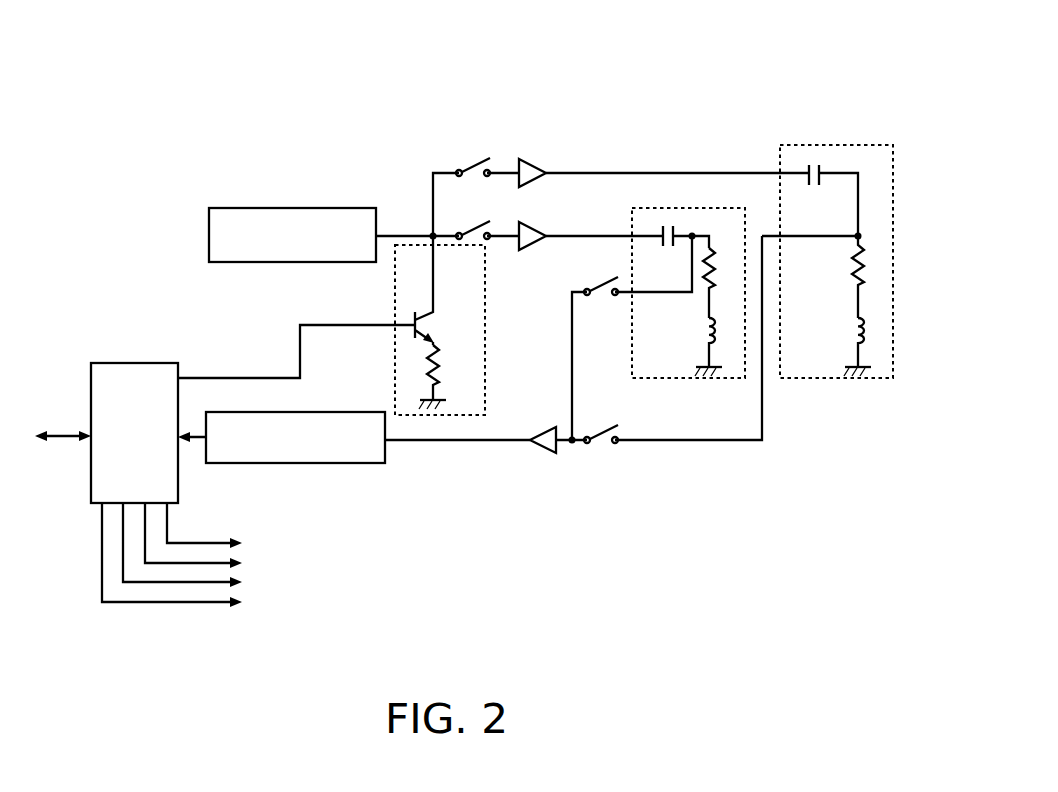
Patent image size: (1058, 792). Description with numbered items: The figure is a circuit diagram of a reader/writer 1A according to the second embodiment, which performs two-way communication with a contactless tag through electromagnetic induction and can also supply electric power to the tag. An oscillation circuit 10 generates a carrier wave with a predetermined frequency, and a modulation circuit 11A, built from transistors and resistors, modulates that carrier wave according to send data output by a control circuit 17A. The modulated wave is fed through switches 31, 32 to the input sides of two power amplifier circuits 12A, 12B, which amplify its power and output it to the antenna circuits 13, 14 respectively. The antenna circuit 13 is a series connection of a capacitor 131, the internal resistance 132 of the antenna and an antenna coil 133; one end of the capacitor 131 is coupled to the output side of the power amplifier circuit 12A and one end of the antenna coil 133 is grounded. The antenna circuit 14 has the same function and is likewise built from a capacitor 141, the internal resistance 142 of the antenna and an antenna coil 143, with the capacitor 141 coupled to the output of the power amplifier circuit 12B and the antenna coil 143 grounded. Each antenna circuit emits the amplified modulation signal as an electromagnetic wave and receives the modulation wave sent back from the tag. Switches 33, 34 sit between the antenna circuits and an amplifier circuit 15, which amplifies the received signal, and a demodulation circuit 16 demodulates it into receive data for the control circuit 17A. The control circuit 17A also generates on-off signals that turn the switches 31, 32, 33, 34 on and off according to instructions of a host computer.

The reader/writer 1A is at (842, 120).
The oscillation circuit 10 is at (350, 208).
The modulation circuit 11A is at (394, 294).
The power amplifier circuit 12A is at (541, 159).
The power amplifier circuit 12B is at (541, 222).
The antenna circuit 13 is at (836, 291).
The capacitor 131 is at (823, 166).
The internal resistance of the antenna 132 is at (854, 270).
The antenna coil 133 is at (854, 350).
The antenna circuit 14 is at (688, 322).
The capacitor 141 is at (676, 233).
The internal resistance of the antenna 142 is at (705, 270).
The antenna coil 143 is at (705, 350).
The amplifier circuit 15 is at (546, 430).
The demodulation circuit 16 is at (345, 412).
The control circuit 17A is at (117, 363).
The switch 31 is at (474, 163).
The switch 32 is at (474, 225).
The switch 33 is at (615, 279).
The switch 34 is at (615, 427).